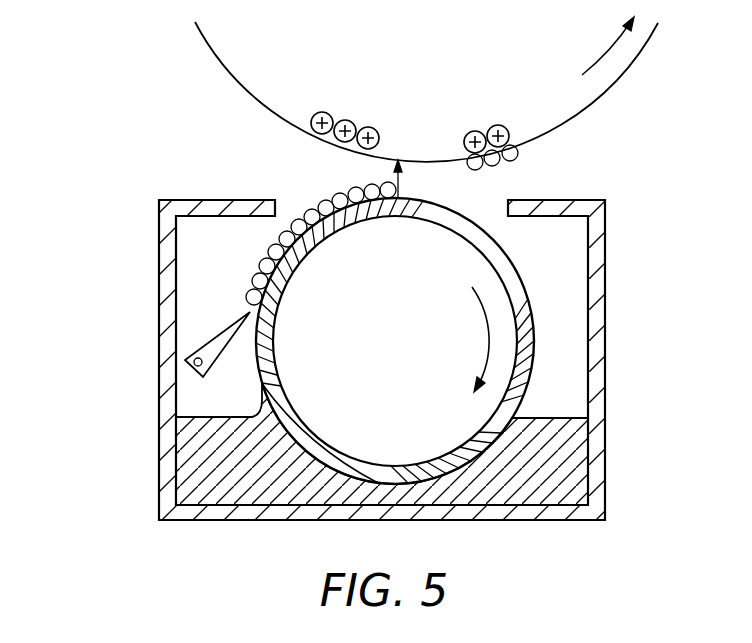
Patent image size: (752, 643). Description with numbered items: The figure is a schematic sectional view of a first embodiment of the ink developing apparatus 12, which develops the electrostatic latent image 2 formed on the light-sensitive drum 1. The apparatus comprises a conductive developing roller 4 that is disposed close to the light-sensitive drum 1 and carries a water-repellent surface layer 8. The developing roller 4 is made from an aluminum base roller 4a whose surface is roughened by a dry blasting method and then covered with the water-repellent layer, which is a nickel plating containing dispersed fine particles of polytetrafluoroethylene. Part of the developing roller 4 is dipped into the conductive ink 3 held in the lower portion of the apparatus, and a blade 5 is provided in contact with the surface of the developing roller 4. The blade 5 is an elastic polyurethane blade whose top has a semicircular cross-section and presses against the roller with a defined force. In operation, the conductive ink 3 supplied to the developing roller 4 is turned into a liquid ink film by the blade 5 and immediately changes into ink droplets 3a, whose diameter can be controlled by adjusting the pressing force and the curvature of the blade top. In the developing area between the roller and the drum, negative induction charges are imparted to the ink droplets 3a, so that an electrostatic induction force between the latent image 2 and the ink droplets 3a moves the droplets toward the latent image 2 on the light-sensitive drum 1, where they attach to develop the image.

The light-sensitive drum 1 is at (618, 77).
The electrostatic latent image 2 is at (345, 120).
The conductive ink 3 is at (583, 445).
The ink droplets 3a is at (320, 196).
The developing roller 4 is at (520, 273).
The aluminum base roller 4a is at (497, 383).
The blade 5 is at (208, 340).
The water-repellent surface layer 8 is at (537, 333).
The ink developing apparatus 12 is at (155, 400).